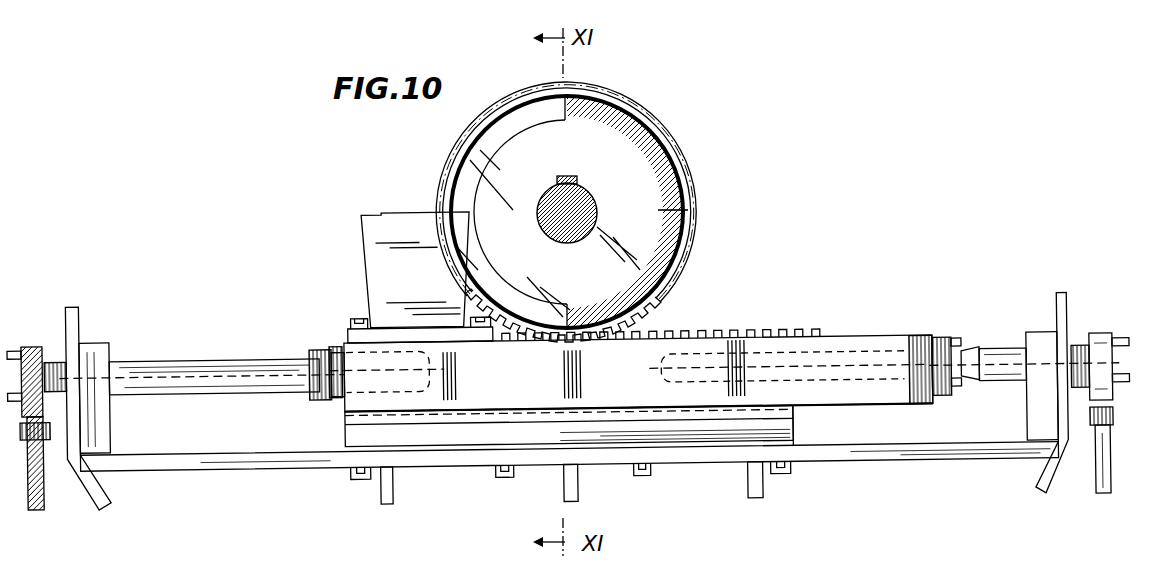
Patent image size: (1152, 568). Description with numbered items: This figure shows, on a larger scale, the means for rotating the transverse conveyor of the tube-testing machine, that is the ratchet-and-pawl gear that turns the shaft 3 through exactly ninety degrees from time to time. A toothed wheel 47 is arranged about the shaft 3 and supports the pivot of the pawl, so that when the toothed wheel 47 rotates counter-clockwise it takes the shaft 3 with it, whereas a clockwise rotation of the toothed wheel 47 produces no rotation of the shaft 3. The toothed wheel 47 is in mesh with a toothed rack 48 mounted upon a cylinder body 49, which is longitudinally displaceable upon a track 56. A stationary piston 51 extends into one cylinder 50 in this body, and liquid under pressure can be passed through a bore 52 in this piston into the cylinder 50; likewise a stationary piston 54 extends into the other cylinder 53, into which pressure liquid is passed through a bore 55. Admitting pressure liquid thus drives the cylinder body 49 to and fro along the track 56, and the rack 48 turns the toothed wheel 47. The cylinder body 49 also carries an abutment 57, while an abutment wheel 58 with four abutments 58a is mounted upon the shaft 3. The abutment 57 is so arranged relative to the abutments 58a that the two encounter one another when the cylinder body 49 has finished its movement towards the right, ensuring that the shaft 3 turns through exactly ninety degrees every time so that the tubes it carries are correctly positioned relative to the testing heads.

The shaft 3 is at (571, 232).
The toothed wheel 47 is at (683, 270).
The toothed rack 48 is at (710, 330).
The cylinder body 49 is at (840, 342).
The cylinder 50 is at (460, 382).
The stationary piston 51 is at (250, 358).
The bore 52 is at (183, 389).
The cylinder 53 is at (660, 384).
The stationary piston 54 is at (778, 360).
The bore 55 is at (833, 372).
The track 56 is at (872, 452).
The abutment 57 is at (372, 261).
The abutment wheel 58 is at (467, 175).
The abutments 58a is at (670, 210).